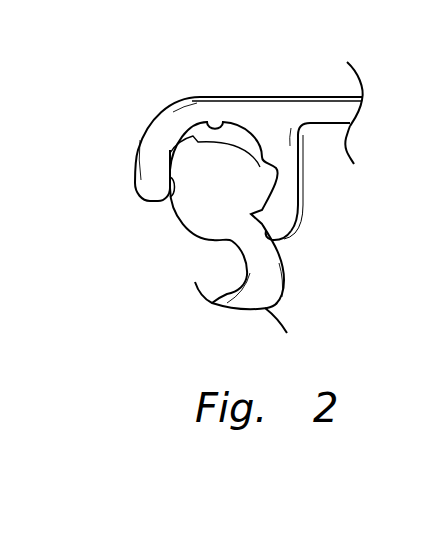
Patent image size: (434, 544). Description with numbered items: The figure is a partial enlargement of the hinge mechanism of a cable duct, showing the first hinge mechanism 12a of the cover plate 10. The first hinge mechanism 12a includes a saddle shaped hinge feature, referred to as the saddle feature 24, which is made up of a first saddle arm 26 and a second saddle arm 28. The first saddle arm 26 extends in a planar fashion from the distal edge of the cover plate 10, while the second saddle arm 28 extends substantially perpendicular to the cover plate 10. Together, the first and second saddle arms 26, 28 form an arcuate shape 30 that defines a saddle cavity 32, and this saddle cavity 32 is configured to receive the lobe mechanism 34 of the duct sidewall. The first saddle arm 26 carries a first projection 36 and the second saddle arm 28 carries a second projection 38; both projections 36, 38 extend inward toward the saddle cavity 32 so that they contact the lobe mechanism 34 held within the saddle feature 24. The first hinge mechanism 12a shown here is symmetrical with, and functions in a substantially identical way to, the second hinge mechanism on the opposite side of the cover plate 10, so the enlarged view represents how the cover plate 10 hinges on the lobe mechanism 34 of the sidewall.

The cover plate 10 is at (339, 105).
The first hinge mechanism 12a is at (143, 94).
The saddle feature 24 is at (272, 107).
The first saddle arm 26 is at (147, 165).
The second saddle arm 28 is at (295, 193).
The arcuate shape 30 is at (207, 127).
The saddle cavity 32 is at (268, 160).
The lobe mechanism 34 is at (200, 162).
The first projection 36 is at (173, 192).
The second projection 38 is at (288, 238).